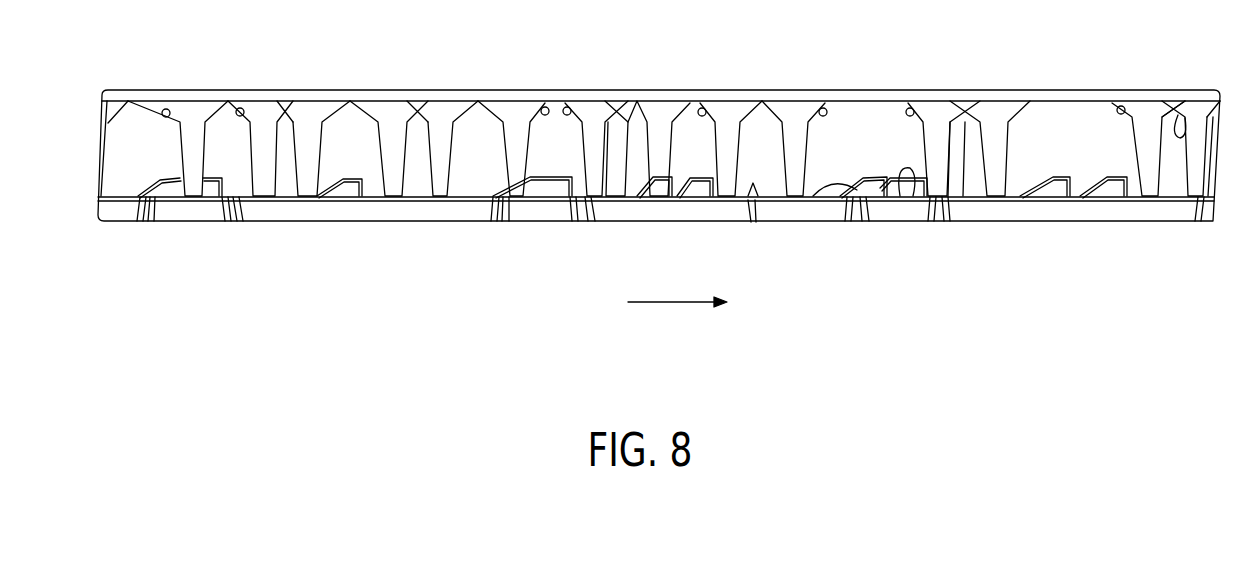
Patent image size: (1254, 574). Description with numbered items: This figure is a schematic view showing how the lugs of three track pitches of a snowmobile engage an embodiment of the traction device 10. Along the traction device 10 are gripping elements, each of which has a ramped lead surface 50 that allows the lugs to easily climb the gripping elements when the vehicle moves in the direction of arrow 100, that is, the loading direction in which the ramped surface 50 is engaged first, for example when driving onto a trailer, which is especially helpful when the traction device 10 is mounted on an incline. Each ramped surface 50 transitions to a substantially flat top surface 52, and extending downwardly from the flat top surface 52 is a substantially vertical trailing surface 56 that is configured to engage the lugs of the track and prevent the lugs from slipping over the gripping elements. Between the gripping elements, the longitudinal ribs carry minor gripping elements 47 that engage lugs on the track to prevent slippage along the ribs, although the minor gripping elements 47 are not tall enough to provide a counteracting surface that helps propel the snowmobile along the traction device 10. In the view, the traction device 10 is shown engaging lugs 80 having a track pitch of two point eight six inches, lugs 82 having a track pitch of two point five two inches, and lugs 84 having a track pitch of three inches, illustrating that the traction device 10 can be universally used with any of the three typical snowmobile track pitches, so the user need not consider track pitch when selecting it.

The lugs 80 is at (163, 101).
The lugs 82 is at (240, 101).
The lugs 84 is at (338, 102).
The substantially flat top surface 52 is at (173, 178).
The ramped lead surface 50 is at (133, 197).
The substantially vertical trailing surface 56 is at (243, 200).
The minor gripping elements 47 is at (753, 200).
The traction device 10 is at (873, 224).
The arrow 100 is at (660, 303).